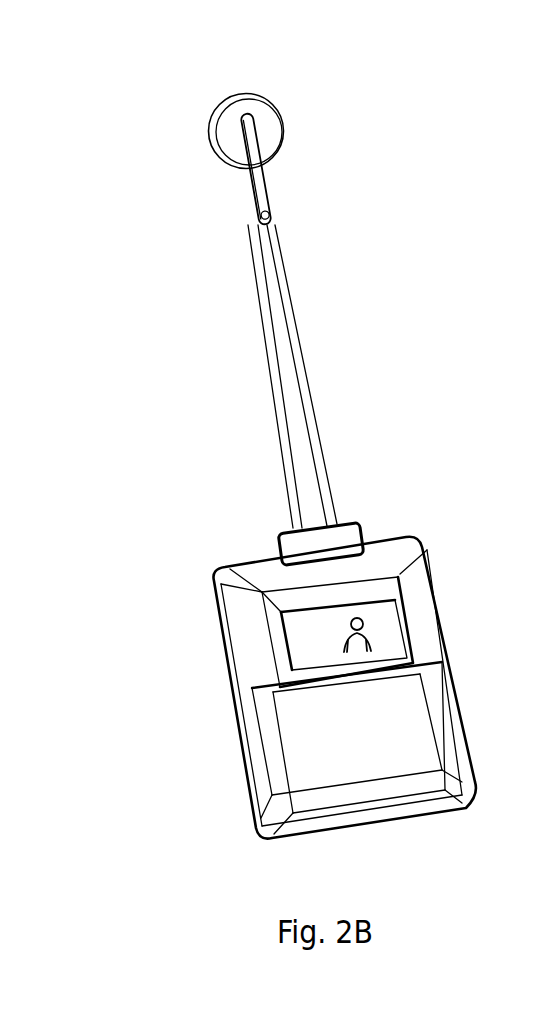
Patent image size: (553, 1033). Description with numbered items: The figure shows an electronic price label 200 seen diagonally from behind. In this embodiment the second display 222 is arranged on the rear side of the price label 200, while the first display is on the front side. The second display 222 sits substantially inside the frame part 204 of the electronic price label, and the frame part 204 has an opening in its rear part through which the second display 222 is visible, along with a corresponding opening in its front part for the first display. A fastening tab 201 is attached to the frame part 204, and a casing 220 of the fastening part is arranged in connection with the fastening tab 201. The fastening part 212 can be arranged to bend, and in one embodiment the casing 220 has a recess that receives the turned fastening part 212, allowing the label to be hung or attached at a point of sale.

The price label 200 is at (99, 57).
The casing of the fastening part 220 is at (275, 133).
The fastening part 212 is at (253, 173).
The fastening tab 201 is at (283, 308).
The frame part 204 is at (258, 673).
The second display 222 is at (392, 632).